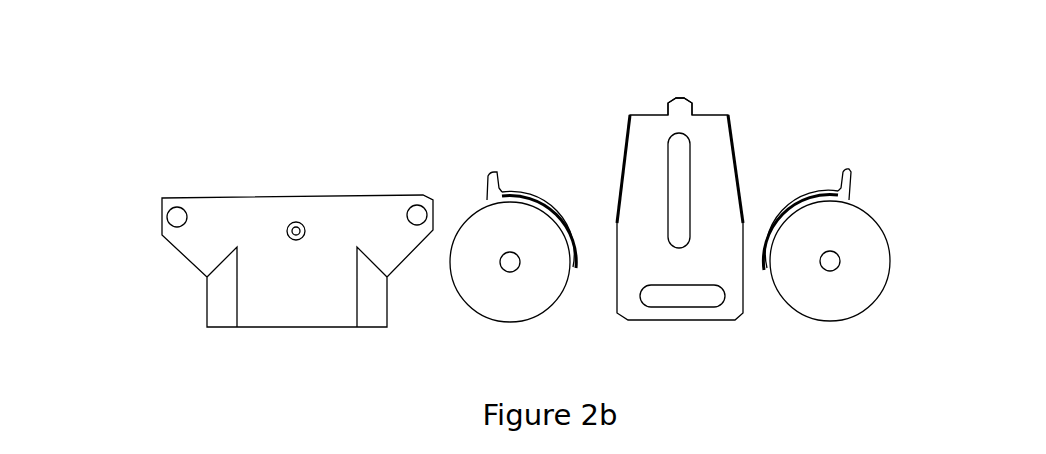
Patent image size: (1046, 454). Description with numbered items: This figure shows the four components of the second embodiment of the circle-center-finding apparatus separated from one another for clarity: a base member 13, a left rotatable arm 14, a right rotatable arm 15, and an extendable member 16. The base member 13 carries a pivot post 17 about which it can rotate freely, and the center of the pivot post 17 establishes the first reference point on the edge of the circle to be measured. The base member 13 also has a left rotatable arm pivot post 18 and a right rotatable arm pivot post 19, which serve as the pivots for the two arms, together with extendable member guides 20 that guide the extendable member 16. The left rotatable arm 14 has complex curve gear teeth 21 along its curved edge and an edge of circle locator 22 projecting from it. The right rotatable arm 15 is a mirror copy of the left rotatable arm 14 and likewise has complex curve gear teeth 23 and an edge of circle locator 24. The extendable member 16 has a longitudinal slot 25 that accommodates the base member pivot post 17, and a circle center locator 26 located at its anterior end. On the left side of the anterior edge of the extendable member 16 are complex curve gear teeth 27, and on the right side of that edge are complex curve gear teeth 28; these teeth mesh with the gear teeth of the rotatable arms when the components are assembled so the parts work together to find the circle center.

The base member 13 is at (205, 293).
The left rotatable arm 14 is at (516, 330).
The right rotatable arm 15 is at (834, 330).
The extendable member 16 is at (681, 328).
The pivot post 17 is at (282, 230).
The left rotatable arm pivot post 18 is at (161, 219).
The right rotatable arm pivot post 19 is at (401, 212).
The extendable member guides 20 is at (366, 333).
The complex curve gear teeth 21 is at (525, 186).
The edge of circle locator 22 is at (482, 172).
The complex curve gear teeth 23 is at (818, 182).
The edge of circle locator 24 is at (851, 161).
The longitudinal slot 25 is at (692, 137).
The circle center locator 26 is at (690, 94).
The complex curve gear teeth 27 is at (616, 170).
The complex curve gear teeth 28 is at (740, 156).